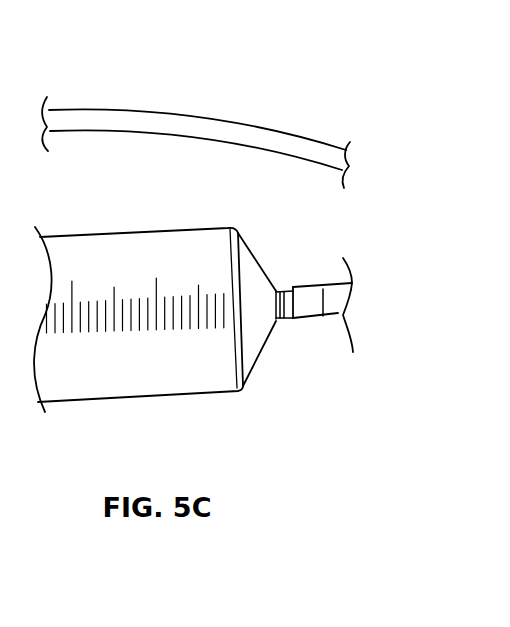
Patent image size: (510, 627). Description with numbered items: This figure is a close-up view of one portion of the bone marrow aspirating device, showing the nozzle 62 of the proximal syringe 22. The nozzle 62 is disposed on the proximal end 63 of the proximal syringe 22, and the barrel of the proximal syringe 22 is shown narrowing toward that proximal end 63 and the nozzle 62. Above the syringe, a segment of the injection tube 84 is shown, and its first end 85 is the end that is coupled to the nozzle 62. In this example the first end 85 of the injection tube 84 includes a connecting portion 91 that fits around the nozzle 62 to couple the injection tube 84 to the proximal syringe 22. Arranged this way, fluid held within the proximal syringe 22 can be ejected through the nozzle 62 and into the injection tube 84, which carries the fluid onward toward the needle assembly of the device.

The proximal syringe 22 is at (65, 413).
The nozzle 62 is at (285, 318).
The proximal end 63 is at (232, 390).
The injection tube 84 is at (190, 139).
The first end 85 is at (323, 153).
The connecting portion 91 is at (333, 303).